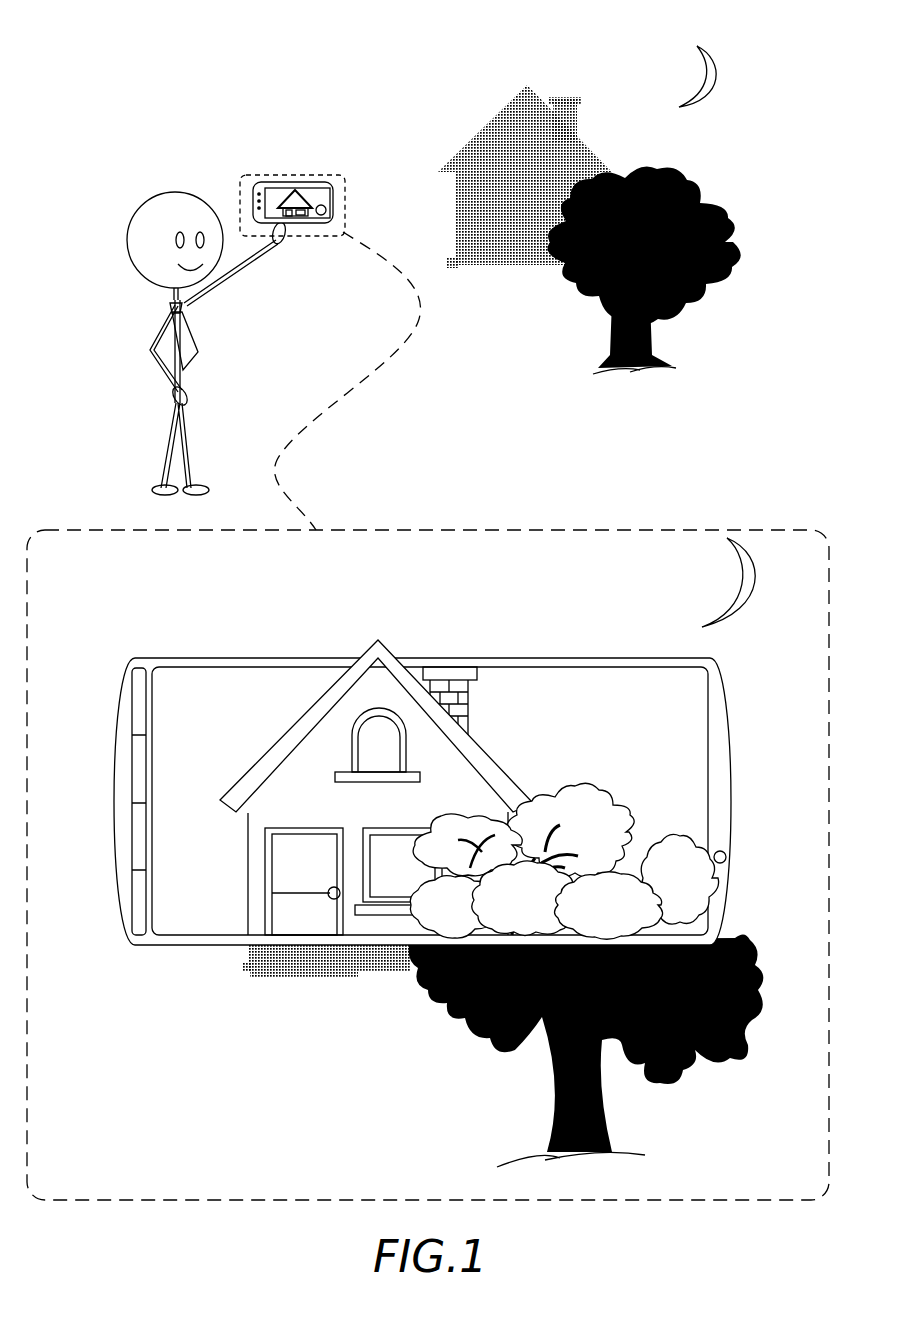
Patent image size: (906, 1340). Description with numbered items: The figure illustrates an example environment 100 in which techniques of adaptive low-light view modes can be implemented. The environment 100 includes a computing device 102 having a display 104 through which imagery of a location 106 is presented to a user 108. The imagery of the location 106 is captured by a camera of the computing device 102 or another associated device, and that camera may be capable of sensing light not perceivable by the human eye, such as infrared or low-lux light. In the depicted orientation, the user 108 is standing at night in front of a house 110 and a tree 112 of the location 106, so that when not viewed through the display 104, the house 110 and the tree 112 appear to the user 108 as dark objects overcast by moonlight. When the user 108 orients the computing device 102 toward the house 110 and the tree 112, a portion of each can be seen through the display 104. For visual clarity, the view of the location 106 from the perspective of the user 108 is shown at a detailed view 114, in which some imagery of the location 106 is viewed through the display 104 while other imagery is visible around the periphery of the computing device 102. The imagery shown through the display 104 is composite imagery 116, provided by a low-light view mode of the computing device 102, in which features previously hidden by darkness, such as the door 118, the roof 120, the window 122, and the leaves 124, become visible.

The environment 100 is at (99, 48).
The computing device 102 is at (462, 544).
The display 104 is at (590, 664).
The location 106 is at (649, 120).
The user 108 is at (154, 367).
The house 110 is at (571, 94).
The tree 112 is at (650, 168).
The detailed view 114 is at (346, 199).
The composite imagery 116 is at (403, 787).
The door 118 is at (265, 859).
The roof 120 is at (283, 729).
The window 122 is at (407, 826).
The leaves 124 is at (600, 788).